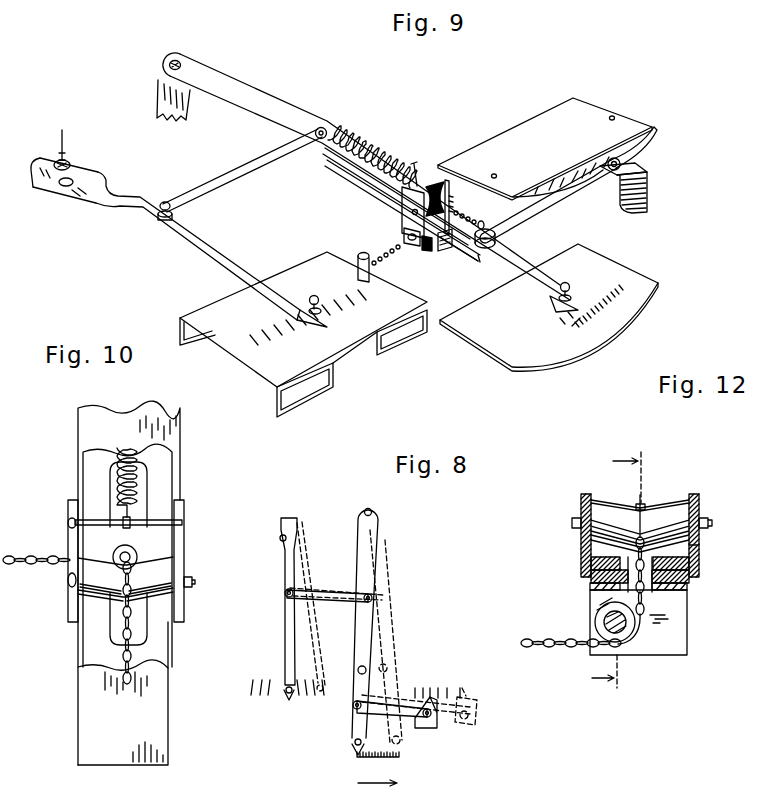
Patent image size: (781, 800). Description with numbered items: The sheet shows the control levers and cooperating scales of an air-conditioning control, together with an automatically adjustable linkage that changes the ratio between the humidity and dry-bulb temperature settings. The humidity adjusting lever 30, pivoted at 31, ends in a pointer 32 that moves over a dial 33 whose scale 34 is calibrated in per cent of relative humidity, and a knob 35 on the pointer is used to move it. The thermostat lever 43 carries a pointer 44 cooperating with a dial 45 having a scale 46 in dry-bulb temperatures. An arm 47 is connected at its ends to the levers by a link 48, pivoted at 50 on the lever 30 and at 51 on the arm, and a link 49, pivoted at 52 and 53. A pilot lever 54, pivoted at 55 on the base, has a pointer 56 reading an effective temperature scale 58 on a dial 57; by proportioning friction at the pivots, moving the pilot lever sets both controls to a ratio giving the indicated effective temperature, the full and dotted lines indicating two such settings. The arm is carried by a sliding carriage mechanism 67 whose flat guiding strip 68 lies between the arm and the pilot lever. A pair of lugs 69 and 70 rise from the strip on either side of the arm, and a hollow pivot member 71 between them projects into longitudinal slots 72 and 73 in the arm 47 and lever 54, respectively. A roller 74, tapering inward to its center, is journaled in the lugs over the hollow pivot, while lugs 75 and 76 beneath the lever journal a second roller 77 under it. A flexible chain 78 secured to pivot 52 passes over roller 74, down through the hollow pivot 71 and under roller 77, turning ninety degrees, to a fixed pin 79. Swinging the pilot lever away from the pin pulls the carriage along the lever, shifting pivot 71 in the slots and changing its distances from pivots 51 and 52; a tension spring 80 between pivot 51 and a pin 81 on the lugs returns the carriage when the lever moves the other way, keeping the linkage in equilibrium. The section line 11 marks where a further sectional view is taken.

In FIG. 12, the section line 11- 11 is at (608, 570).
In FIG. 9, the adjusting lever 30 is at (140, 201).
In FIG. 8, the adjusting lever 30 is at (283, 624).
In FIG. 9, the pivot 31 is at (67, 186).
In FIG. 9, the pointer 32 is at (314, 316).
In FIG. 9, the dial 33 is at (227, 338).
In FIG. 9, the scale 34 is at (256, 343).
In FIG. 9, the knob 35 is at (315, 294).
In FIG. 9, the lever 43 is at (648, 195).
In FIG. 8, the lever 43 is at (420, 728).
In FIG. 9, the pointer 44 is at (645, 167).
In FIG. 9, the dial 45 is at (595, 115).
In FIG. 9, the scale 46 is at (650, 130).
In FIG. 9, the arm 47 is at (355, 172).
In FIG. 10, the arm 47 is at (165, 468).
In FIG. 12, the arm 47 is at (700, 565).
In FIG. 9, the link 48 is at (218, 183).
In FIG. 9, the link 49 is at (520, 219).
In FIG. 9, the pivot 50 is at (165, 201).
In FIG. 8, the pivot 50 is at (284, 593).
In FIG. 9, the pivot 51 is at (321, 127).
In FIG. 8, the pivot 51 is at (374, 598).
In FIG. 9, the pivot 52 is at (496, 240).
In FIG. 8, the pivot 52 is at (353, 708).
In FIG. 9, the pivot 53 is at (630, 160).
In FIG. 8, the pivot 53 is at (431, 717).
In FIG. 9, the pilot lever 54 is at (275, 118).
In FIG. 8, the pilot lever 54 is at (372, 560).
In FIG. 12, the pilot lever 54 is at (688, 590).
In FIG. 9, the pivot 55 is at (180, 60).
In FIG. 8, the pivot 55 is at (362, 508).
In FIG. 9, the pointer 56 is at (562, 309).
In FIG. 8, the pointer 56 is at (354, 742).
In FIG. 9, the dial 57 is at (620, 275).
In FIG. 9, the scale 58 is at (574, 327).
In FIG. 8, the scale 58 is at (357, 758).
In FIG. 9, the sliding carriage mechanism 67 is at (455, 206).
In FIG. 12, the sliding carriage mechanism 67 is at (707, 550).
In FIG. 9, the flat guiding strip 68 is at (378, 197).
In FIG. 10, the flat guiding strip 68 is at (165, 700).
In FIG. 12, the flat guiding strip 68 is at (697, 581).
In FIG. 9, the lug 69 is at (404, 211).
In FIG. 10, the lug 69 is at (68, 607).
In FIG. 12, the lug 69 is at (581, 505).
In FIG. 9, the lug 70 is at (445, 182).
In FIG. 10, the lug 70 is at (184, 550).
In FIG. 12, the lug 70 is at (700, 505).
In FIG. 10, the hollow pivot member 71 is at (138, 553).
In FIG. 12, the hollow pivot member 71 is at (652, 590).
In FIG. 9, the longitudinal slot 72 is at (450, 245).
In FIG. 10, the longitudinal slot 72 is at (110, 507).
In FIG. 12, the longitudinal slot 72 is at (592, 562).
In FIG. 12, the longitudinal slot 73 is at (620, 595).
In FIG. 9, the roller 74 is at (436, 192).
In FIG. 10, the roller 74 is at (92, 598).
In FIG. 12, the roller 74 is at (670, 514).
In FIG. 9, the lug 75 is at (404, 232).
In FIG. 12, the lug 75 is at (680, 637).
In FIG. 9, the lug 76 is at (445, 249).
In FIG. 9, the roller 77 is at (425, 247).
In FIG. 12, the roller 77 is at (600, 620).
In FIG. 9, the flexible chain 78 is at (385, 252).
In FIG. 10, the flexible chain 78 is at (40, 555).
In FIG. 12, the flexible chain 78 is at (643, 503).
In FIG. 9, the pin 79 is at (360, 256).
In FIG. 9, the tension spring 80 is at (372, 142).
In FIG. 10, the tension spring 80 is at (125, 448).
In FIG. 9, the pin 81 is at (416, 172).
In FIG. 10, the pin 81 is at (152, 520).